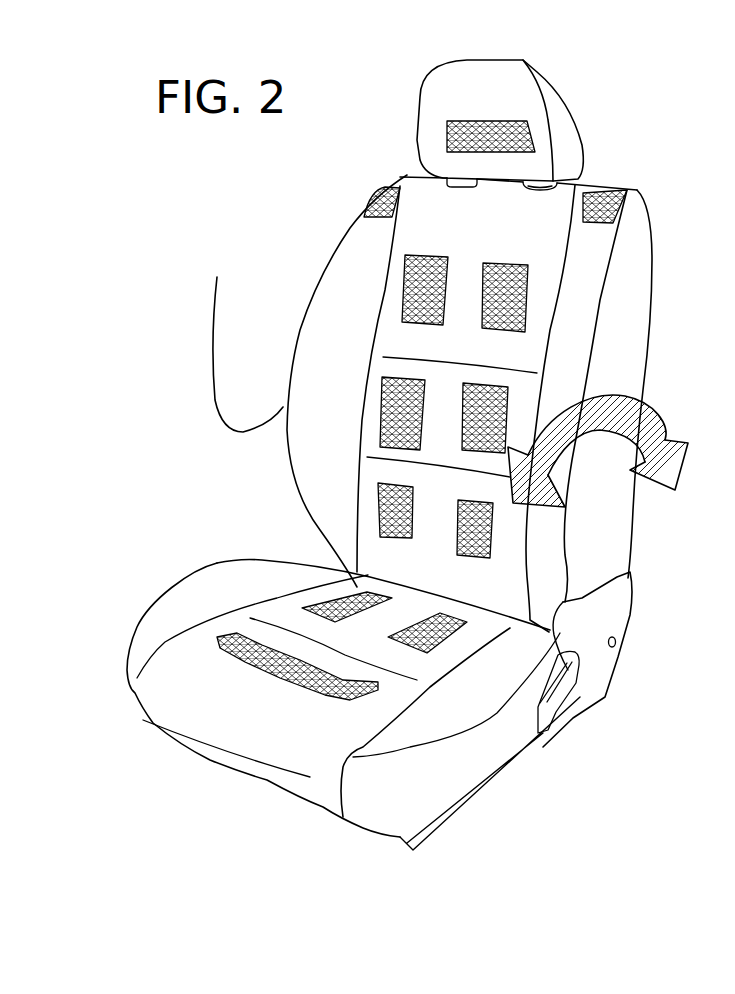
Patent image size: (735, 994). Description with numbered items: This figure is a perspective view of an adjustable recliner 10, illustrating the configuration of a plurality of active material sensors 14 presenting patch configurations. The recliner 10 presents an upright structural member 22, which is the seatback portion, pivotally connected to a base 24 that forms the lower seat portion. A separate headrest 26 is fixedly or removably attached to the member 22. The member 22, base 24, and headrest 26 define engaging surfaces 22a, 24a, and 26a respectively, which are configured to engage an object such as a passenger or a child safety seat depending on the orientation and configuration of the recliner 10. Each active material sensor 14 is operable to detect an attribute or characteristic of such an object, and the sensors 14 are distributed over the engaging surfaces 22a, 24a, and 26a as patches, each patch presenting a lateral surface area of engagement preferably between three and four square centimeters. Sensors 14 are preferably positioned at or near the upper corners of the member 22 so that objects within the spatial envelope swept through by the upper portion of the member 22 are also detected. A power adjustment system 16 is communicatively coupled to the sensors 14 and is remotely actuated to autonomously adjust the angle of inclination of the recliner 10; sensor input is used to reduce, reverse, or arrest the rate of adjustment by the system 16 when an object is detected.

The adjustable recliner 10 is at (652, 57).
The active material sensor 14 is at (443, 140).
The power adjustment system 16 is at (616, 642).
The upright structural member 22 is at (474, 403).
The engaging surface 22a is at (525, 235).
The base 24 is at (425, 704).
The engaging surface 24a is at (265, 719).
The headrest 26 is at (570, 125).
The engaging surface 26a is at (519, 105).